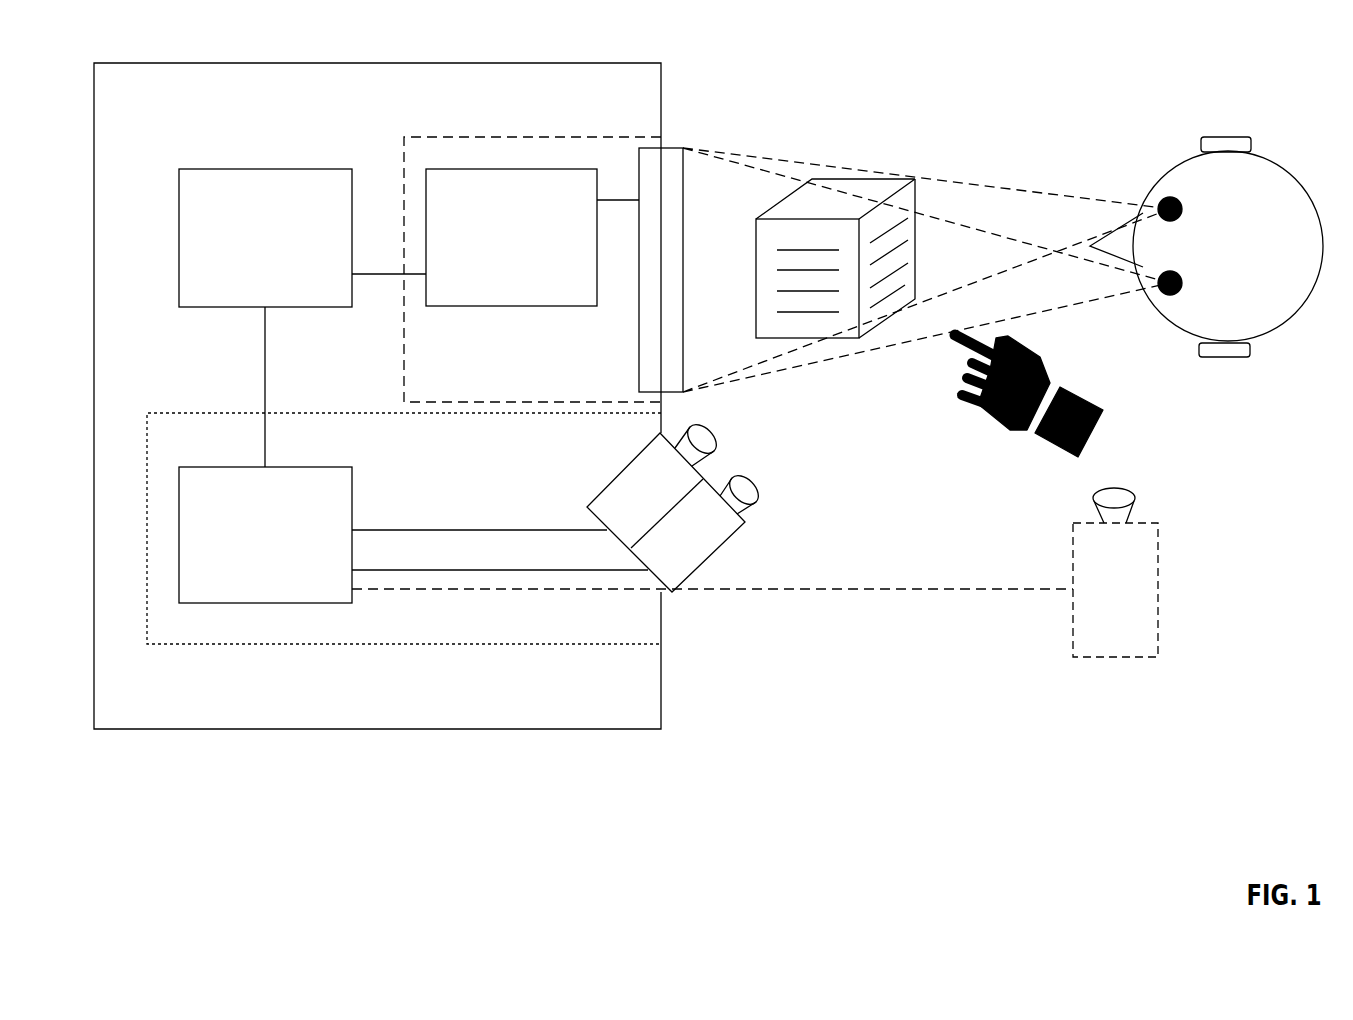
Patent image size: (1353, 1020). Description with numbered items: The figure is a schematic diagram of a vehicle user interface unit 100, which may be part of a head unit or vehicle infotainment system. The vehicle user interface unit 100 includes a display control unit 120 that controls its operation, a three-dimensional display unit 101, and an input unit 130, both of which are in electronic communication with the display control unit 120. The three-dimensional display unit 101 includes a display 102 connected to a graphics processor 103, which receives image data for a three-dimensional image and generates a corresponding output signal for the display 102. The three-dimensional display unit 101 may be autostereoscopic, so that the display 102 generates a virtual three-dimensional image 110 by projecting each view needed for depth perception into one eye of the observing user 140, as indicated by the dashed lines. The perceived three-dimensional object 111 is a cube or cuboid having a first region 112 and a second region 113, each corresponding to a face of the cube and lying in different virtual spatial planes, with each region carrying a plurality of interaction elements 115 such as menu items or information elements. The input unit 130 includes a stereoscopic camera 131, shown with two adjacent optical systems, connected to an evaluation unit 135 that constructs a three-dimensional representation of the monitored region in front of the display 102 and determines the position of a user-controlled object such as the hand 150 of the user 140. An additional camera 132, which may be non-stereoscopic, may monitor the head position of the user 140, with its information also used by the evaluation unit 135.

The vehicle user interface unit 100 is at (640, 63).
The 3D display unit 101 is at (422, 137).
The display 102 is at (679, 148).
The graphics processor 103 is at (587, 306).
The virtual 3D image 110 is at (852, 236).
The 3D object 111 is at (859, 338).
The first region 112 is at (890, 316).
The second region 113 is at (795, 338).
The interaction elements 115 is at (777, 291).
The display control unit 120 is at (338, 169).
The input unit 130 is at (163, 413).
The stereoscopic camera 131 is at (713, 553).
The additional camera 132 is at (1149, 657).
The evaluation unit 135 is at (337, 467).
The user 140 is at (1243, 137).
The hand 150 is at (1047, 436).